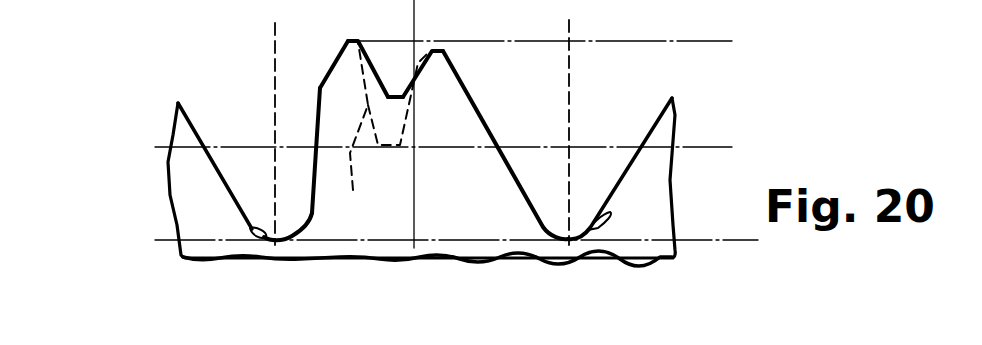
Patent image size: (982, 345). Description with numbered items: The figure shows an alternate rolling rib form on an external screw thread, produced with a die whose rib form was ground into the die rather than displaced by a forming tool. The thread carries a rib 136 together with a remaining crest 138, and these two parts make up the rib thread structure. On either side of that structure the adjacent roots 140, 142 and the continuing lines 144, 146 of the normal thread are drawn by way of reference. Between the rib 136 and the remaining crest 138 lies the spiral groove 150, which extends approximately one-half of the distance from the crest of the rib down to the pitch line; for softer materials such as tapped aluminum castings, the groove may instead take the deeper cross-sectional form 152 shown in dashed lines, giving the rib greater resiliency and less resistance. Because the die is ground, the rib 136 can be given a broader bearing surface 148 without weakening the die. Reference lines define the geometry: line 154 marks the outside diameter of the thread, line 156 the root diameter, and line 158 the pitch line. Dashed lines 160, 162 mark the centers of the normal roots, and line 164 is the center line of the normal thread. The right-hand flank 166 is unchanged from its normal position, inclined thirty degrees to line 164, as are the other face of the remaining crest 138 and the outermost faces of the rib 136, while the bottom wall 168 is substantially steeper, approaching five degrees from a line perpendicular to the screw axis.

The rib 136 is at (337, 91).
The remaining crest 138 is at (440, 63).
The adjacent root 140 is at (247, 228).
The adjacent root 142 is at (607, 215).
The continuing line 144 is at (193, 123).
The continuing line 146 is at (632, 168).
The bearing surface 148 is at (337, 62).
The spiral groove 150 is at (397, 96).
The spiral groove cross-sectional form 152 is at (378, 130).
The line 154 is at (647, 42).
The line 156 is at (721, 240).
The line 158 is at (155, 147).
The dashed line 160 is at (275, 25).
The dashed line 162 is at (569, 16).
The line 164 is at (414, 171).
The right-hand flank 166 is at (482, 115).
The bottom wall 168 is at (316, 138).